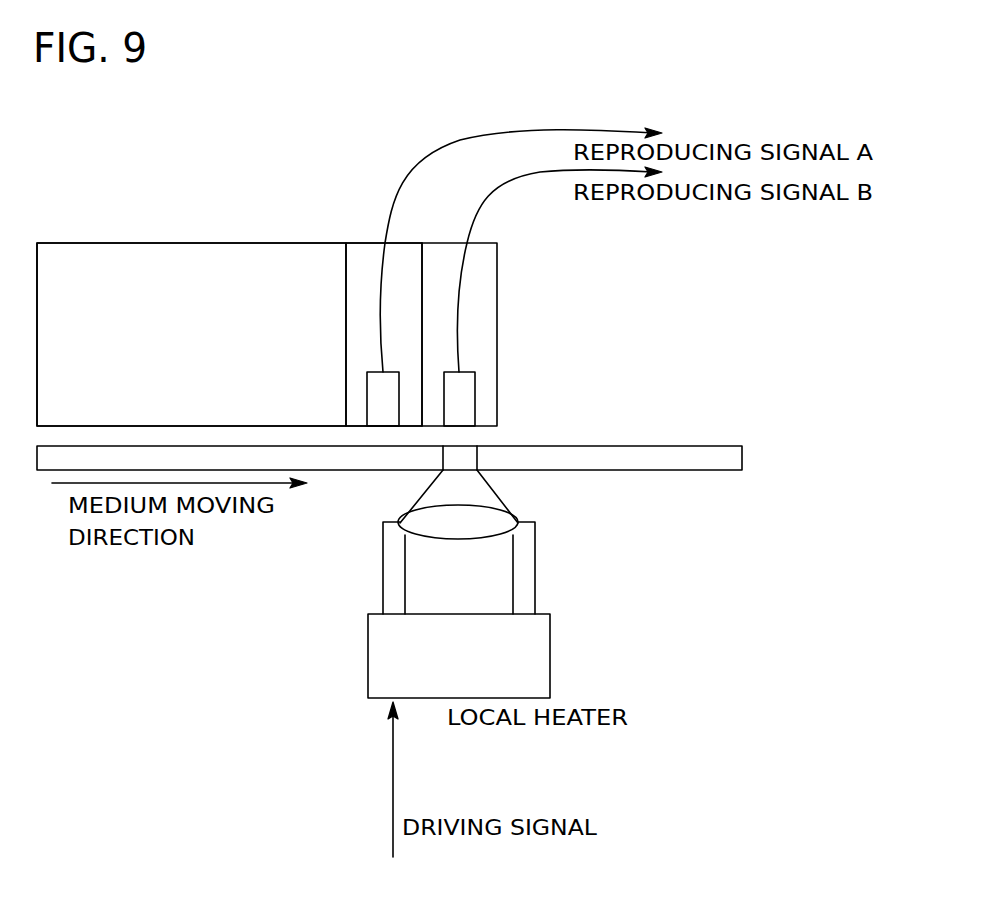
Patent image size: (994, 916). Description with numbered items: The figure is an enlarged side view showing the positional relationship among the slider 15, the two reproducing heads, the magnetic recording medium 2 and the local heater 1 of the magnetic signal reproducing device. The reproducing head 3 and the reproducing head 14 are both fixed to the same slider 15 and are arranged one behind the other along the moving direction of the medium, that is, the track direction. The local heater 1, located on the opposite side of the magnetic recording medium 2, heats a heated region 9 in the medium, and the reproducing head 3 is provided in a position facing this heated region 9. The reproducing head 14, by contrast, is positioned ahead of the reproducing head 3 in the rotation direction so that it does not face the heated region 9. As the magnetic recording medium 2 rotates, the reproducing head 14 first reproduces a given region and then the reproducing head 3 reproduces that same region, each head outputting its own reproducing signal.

The local heater 1 is at (368, 667).
The magnetic recording medium 2 is at (662, 470).
The reproducing head 3 is at (498, 296).
The heated region 9 is at (477, 446).
The reproducing head 14 is at (370, 243).
The slider 15 is at (193, 243).